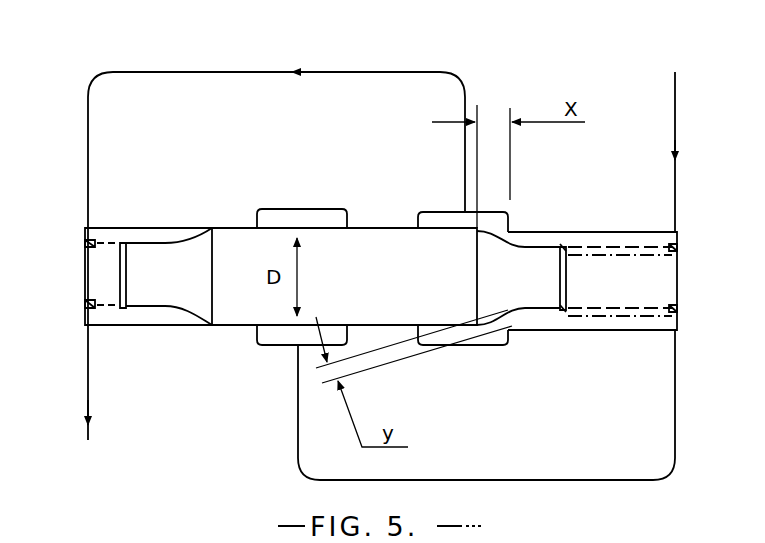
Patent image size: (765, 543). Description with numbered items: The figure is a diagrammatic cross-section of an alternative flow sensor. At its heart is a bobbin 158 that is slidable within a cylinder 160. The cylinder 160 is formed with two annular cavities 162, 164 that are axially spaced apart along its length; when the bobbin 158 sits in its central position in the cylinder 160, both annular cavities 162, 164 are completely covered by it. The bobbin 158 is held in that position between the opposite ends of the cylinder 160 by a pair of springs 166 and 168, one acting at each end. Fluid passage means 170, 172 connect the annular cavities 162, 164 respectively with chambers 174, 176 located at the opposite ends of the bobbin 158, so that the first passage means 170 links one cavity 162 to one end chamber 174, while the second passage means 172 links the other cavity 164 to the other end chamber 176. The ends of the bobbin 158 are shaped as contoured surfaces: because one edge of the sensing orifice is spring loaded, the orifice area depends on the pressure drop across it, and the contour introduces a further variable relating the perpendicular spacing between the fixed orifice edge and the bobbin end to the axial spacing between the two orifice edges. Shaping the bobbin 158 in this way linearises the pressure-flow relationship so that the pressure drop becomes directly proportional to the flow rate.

The bobbin 158 is at (392, 289).
The cylinder 160 is at (538, 232).
The annular cavity 162 is at (320, 208).
The annular cavity 164 is at (427, 211).
The spring 166 is at (96, 306).
The spring 168 is at (641, 315).
The fluid passage means 170 is at (636, 481).
The fluid passage means 172 is at (245, 72).
The chamber 174 is at (630, 289).
The chamber 176 is at (100, 273).